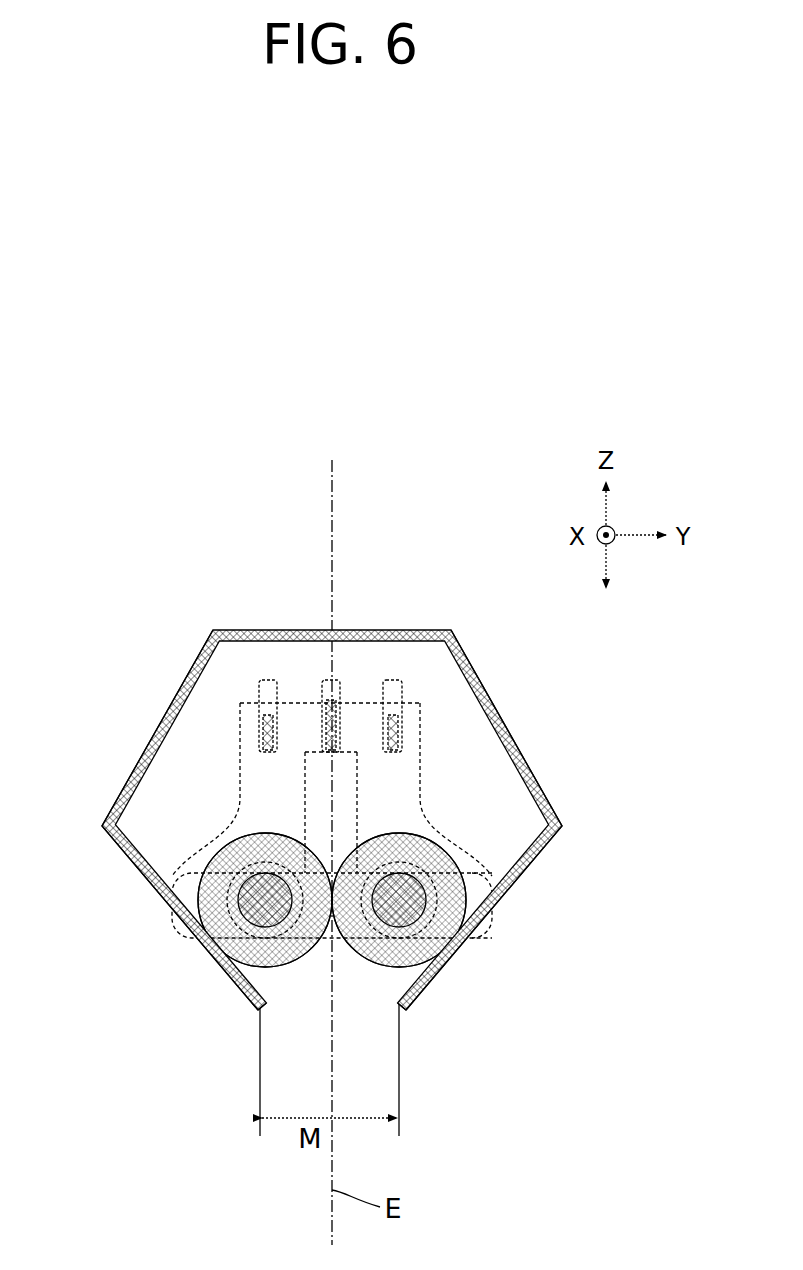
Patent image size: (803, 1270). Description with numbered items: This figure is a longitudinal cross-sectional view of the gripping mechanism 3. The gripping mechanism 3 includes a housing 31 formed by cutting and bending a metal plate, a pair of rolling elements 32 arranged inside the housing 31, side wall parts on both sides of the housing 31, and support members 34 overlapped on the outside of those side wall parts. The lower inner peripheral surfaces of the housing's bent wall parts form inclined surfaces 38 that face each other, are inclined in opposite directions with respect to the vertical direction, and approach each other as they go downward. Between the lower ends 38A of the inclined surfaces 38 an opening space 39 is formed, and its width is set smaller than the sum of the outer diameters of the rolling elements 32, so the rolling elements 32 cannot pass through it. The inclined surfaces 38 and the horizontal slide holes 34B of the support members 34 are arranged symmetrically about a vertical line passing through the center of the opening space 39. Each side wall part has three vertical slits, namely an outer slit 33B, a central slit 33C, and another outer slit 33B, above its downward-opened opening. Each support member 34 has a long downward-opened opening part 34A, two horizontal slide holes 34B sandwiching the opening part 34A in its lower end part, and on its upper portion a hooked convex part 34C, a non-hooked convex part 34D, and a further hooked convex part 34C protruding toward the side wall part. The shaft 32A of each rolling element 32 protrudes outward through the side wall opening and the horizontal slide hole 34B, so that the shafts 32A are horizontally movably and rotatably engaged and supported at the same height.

The gripping mechanism 3 is at (381, 510).
The housing 31 is at (470, 630).
The rolling elements 32 is at (252, 968).
The shaft 32A is at (208, 950).
The vertical slit 33B is at (265, 680).
The vertical slit 33C is at (331, 680).
The support member 34 is at (422, 773).
The opening part 34A is at (305, 807).
The horizontal slide hole 34B is at (184, 884).
The hooked convex part 34C is at (271, 717).
The non-hooked convex part 34D is at (323, 713).
The inclined surface 38 is at (134, 841).
The lower end 38A is at (257, 1006).
The opening space 39 is at (400, 1007).